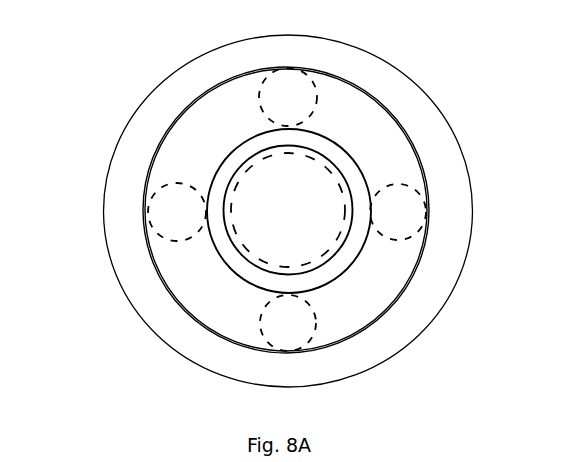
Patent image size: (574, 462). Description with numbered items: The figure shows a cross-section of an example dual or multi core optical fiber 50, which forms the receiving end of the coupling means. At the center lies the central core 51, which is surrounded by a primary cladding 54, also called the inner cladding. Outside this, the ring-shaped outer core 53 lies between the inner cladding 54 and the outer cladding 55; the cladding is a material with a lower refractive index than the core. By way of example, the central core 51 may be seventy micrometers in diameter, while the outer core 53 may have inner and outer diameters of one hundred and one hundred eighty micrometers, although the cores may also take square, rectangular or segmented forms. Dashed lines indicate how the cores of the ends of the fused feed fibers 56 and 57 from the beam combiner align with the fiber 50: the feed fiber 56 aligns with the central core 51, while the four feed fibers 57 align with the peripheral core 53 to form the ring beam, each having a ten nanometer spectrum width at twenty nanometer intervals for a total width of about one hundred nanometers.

The dual/multi core optical fiber 50 is at (392, 58).
The central core 51 is at (317, 150).
The outer core 53 is at (193, 127).
The primary cladding 54 is at (248, 268).
The outer cladding 55 is at (127, 243).
The fused feed fiber 56 is at (232, 191).
The feed fibers 57 is at (398, 205).